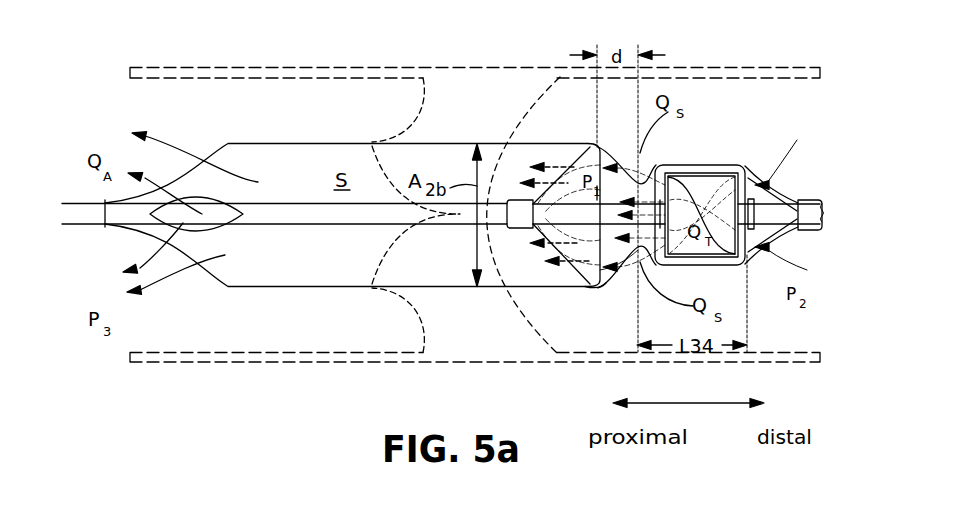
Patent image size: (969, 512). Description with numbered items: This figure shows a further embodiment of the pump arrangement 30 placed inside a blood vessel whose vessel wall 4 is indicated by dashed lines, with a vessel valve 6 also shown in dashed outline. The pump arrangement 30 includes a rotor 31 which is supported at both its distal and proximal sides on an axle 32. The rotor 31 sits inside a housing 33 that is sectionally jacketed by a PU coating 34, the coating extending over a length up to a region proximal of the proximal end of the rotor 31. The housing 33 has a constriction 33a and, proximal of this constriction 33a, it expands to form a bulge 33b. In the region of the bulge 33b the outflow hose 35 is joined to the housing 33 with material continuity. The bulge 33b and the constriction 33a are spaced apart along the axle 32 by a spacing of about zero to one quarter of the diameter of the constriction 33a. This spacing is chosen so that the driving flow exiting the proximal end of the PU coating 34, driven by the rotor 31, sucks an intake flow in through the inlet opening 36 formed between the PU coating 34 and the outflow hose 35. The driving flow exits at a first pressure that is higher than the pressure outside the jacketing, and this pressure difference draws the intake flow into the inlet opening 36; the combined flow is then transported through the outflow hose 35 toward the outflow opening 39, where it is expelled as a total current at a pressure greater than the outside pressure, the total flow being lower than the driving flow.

The vessel wall 4 is at (495, 80).
The vessel valve 6 is at (397, 177).
The pump arrangement 30 is at (337, 118).
The rotor 31 is at (692, 165).
The axle 32 is at (297, 226).
The housing 33 is at (773, 192).
The constriction 33a is at (642, 268).
The bulge 33b is at (606, 152).
The PU coating 34 is at (749, 270).
The outflow hose 35 is at (275, 143).
The inlet opening 36 is at (608, 284).
The outflow opening 39 is at (172, 216).